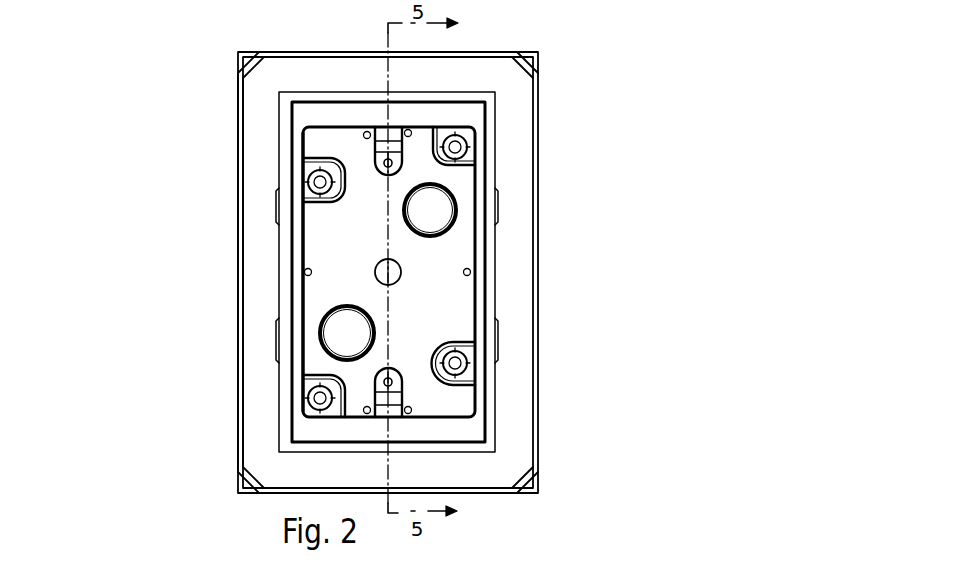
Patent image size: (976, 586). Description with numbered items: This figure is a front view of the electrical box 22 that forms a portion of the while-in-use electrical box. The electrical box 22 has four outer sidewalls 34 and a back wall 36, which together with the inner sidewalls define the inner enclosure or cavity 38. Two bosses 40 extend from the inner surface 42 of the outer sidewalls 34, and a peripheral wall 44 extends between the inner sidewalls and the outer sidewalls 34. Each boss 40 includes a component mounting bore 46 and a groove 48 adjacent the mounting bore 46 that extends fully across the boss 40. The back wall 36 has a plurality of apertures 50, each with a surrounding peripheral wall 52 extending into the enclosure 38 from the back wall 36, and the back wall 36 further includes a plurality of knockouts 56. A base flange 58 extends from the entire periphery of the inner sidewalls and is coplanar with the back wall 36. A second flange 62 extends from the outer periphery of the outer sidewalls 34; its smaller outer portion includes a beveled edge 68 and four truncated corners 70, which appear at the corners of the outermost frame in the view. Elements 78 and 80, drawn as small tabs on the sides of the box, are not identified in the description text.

The electrical box 22 is at (138, 134).
The outer sidewalls 34 is at (490, 122).
The back wall 36 is at (327, 249).
The inner enclosure or cavity 38 is at (458, 403).
The bosses 40 is at (402, 162).
The inner surface 42 is at (338, 128).
The peripheral wall 44 is at (468, 145).
The component mounting bores 46 is at (400, 167).
The groove 48 is at (401, 143).
The apertures 50 is at (462, 365).
The surrounding peripheral wall 52 is at (455, 343).
The knockouts 56 is at (430, 210).
The base flange 58 is at (538, 53).
The second flange 62 is at (527, 81).
The beveled edge 68 is at (238, 430).
The truncated corners 70 is at (238, 487).
The upper side tab 78 is at (279, 203).
The lower side tab 80 is at (279, 277).